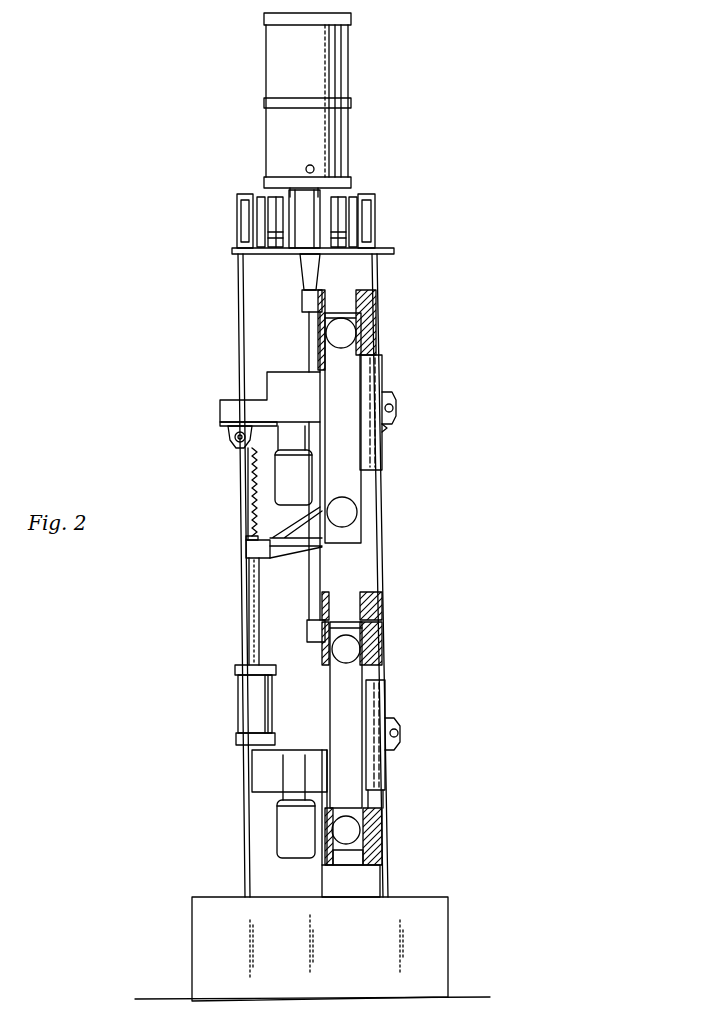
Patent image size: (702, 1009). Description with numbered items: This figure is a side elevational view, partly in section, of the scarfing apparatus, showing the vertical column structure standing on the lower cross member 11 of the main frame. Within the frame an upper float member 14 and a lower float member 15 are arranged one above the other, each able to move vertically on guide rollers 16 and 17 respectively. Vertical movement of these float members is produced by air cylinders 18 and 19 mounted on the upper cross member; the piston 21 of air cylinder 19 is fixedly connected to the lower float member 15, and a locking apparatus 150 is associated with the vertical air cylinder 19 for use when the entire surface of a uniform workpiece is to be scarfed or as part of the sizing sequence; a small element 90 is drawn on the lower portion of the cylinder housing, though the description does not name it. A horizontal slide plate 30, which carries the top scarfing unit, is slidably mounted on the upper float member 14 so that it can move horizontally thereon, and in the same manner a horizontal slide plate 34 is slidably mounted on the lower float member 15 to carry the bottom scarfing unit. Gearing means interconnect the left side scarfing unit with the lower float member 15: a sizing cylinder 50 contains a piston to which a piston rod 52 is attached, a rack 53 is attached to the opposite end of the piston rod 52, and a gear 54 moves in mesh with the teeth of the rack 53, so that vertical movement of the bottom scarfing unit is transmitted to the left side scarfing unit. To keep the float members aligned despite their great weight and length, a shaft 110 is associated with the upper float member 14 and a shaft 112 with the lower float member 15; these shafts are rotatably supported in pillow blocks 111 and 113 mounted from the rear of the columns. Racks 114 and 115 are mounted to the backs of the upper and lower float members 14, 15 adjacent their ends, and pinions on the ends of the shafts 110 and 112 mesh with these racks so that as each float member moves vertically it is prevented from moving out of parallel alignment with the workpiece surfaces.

The lower cross member 11 is at (205, 926).
The upper float member 14 is at (346, 387).
The lower float member 15 is at (357, 700).
The guide rollers 16 is at (345, 334).
The guide rollers 17 is at (352, 652).
The air cylinder 18 is at (338, 73).
The air cylinder 19 is at (282, 146).
The piston 21 is at (320, 580).
The horizontal slide plate 30 is at (298, 378).
The horizontal slide plate 34 is at (262, 780).
The sizing cylinder 50 is at (248, 723).
The piston rod 52 is at (249, 611).
The rack 53 is at (252, 502).
The gear 54 is at (229, 440).
The pin 90 is at (315, 169).
The shaft 110 is at (394, 407).
The pillow block 111 is at (389, 426).
The shaft 112 is at (399, 733).
The pillow block 113 is at (394, 718).
The rack 114 is at (371, 453).
The rack 115 is at (372, 790).
The locking apparatus 150 is at (298, 238).